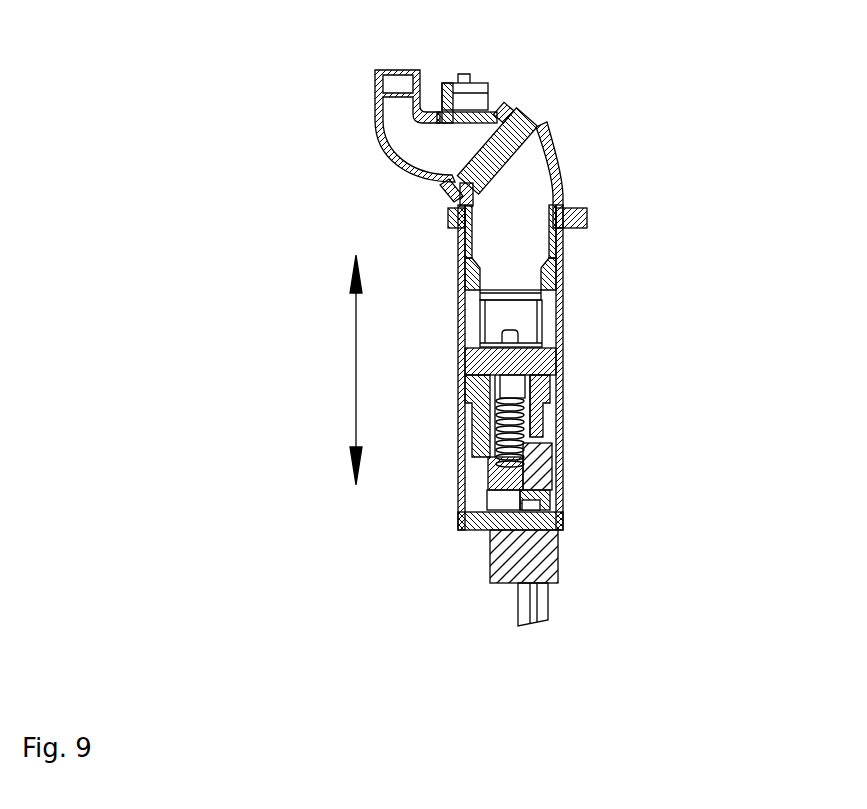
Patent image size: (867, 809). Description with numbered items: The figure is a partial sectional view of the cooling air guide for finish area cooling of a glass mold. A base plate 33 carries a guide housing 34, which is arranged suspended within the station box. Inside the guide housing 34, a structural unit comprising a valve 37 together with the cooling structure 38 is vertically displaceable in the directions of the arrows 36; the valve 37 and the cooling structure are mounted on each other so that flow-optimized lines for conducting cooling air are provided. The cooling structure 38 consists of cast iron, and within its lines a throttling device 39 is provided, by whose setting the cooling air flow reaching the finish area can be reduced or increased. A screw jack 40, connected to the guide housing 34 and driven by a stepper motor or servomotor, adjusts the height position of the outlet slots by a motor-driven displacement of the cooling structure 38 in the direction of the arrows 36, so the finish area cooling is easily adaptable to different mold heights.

The base plate 33 is at (580, 210).
The guide housing 34 is at (563, 272).
The arrows 36 is at (357, 345).
The valve 37 is at (563, 420).
The cooling structure 38 is at (555, 153).
The throttling device 39 is at (533, 110).
The screw jack 40 is at (560, 550).